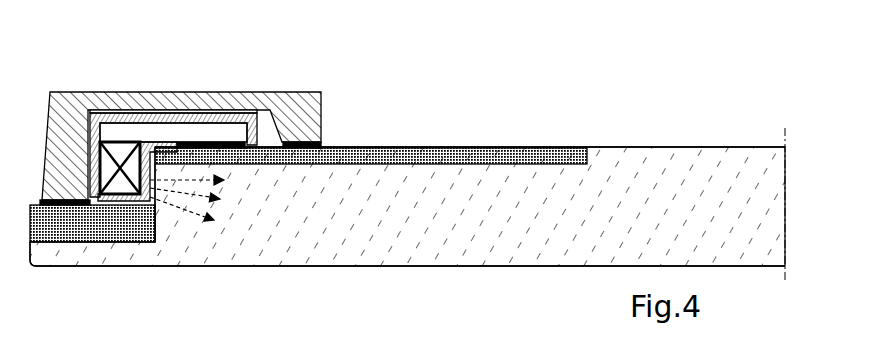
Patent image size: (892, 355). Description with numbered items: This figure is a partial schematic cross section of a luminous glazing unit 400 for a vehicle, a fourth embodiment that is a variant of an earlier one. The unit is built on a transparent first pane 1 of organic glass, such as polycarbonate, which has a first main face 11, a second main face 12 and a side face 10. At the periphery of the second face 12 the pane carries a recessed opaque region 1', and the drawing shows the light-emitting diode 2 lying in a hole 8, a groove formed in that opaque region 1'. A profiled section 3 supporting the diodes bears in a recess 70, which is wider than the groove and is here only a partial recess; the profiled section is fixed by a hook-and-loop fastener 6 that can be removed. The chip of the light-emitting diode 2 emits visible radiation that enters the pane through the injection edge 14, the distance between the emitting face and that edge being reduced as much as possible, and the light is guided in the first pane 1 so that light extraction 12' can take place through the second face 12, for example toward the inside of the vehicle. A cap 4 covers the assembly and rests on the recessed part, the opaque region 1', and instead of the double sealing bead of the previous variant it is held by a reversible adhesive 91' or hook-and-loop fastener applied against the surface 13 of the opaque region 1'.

The luminous glazing unit 400 is at (406, 184).
The first pane 1 is at (407, 174).
The opaque region 1' is at (369, 197).
The light-emitting diode 2 is at (123, 146).
The profiled section 3 is at (197, 128).
The cap 4 is at (103, 95).
The hook-and-loop fastener 6 is at (233, 141).
The hole 8 is at (96, 203).
The side face 10 is at (28, 268).
The first main face 11 is at (260, 267).
The second main face 12 is at (643, 115).
The light extraction 12' is at (742, 116).
The surface of the opaque region 13 is at (447, 150).
The injection edge 14 is at (137, 201).
The recess 70 is at (150, 112).
The reversible adhesive 91' is at (323, 111).